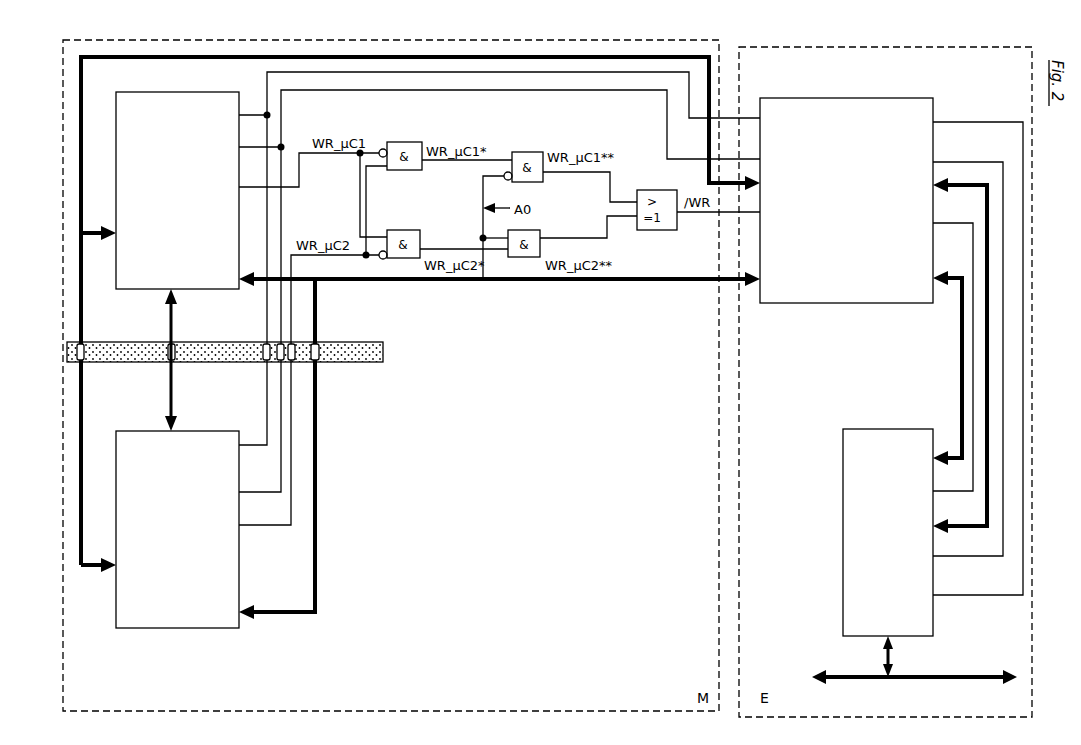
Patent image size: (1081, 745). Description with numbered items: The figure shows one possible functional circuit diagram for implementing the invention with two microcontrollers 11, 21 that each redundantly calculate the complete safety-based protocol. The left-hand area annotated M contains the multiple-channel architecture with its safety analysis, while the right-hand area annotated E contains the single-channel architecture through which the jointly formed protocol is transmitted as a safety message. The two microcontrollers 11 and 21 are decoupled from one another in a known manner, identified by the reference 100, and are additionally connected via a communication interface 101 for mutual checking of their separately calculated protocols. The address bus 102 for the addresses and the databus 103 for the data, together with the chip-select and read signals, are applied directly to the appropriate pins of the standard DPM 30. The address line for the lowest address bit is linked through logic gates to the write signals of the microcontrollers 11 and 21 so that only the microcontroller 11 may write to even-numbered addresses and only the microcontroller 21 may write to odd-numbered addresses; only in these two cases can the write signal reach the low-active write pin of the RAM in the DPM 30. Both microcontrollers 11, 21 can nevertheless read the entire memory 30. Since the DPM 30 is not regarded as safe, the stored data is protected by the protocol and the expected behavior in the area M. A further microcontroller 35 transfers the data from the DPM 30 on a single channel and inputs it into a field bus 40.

The microcontroller 11 is at (163, 98).
The microcontroller 21 is at (140, 600).
The DPM 30 is at (868, 118).
The further microcontroller 35 is at (853, 458).
The field bus 40 is at (957, 677).
The decoupling 100 is at (366, 362).
The communication interface 101 is at (172, 376).
The address bus 102 is at (619, 283).
The databus 103 is at (383, 57).